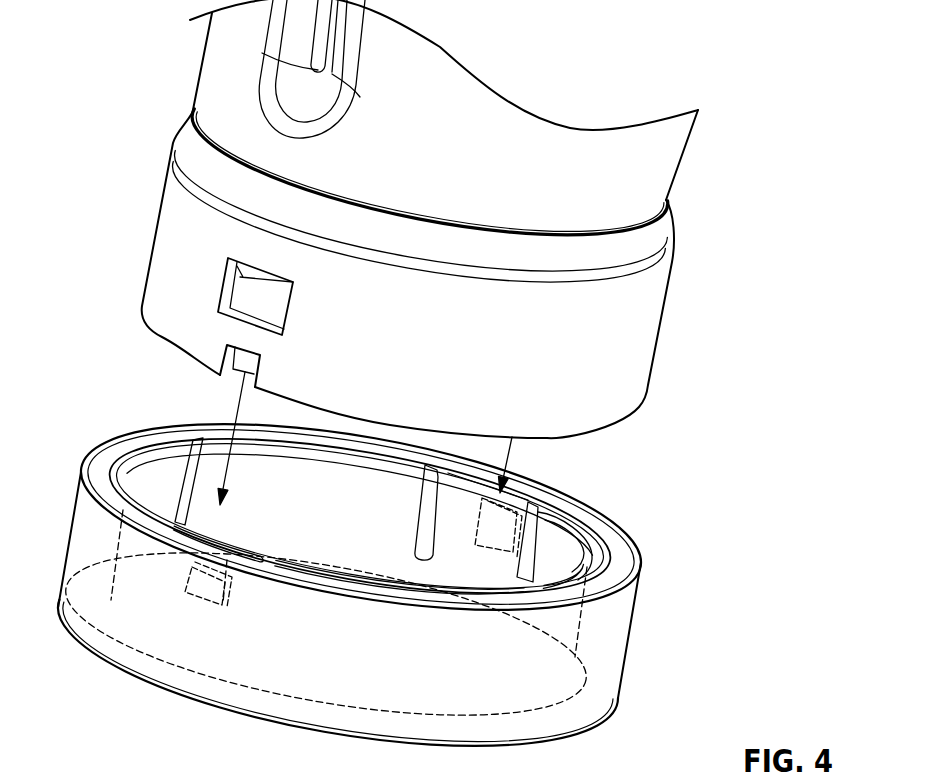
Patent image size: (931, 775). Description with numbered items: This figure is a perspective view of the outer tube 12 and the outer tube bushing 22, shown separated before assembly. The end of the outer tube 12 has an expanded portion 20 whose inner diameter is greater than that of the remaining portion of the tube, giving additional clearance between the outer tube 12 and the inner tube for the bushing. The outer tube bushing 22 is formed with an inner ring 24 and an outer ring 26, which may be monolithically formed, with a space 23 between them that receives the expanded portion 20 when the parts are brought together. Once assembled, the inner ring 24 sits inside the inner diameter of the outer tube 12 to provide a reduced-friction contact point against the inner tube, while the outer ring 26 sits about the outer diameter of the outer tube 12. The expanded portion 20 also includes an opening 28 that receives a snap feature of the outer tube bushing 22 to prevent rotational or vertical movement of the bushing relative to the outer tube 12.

The outer tube 12 is at (198, 80).
The expanded portion 20 is at (657, 333).
The outer tube bushing 22 is at (98, 688).
The space 23 is at (597, 547).
The inner ring 24 is at (632, 582).
The outer ring 26 is at (622, 657).
The opening 28 is at (247, 297).